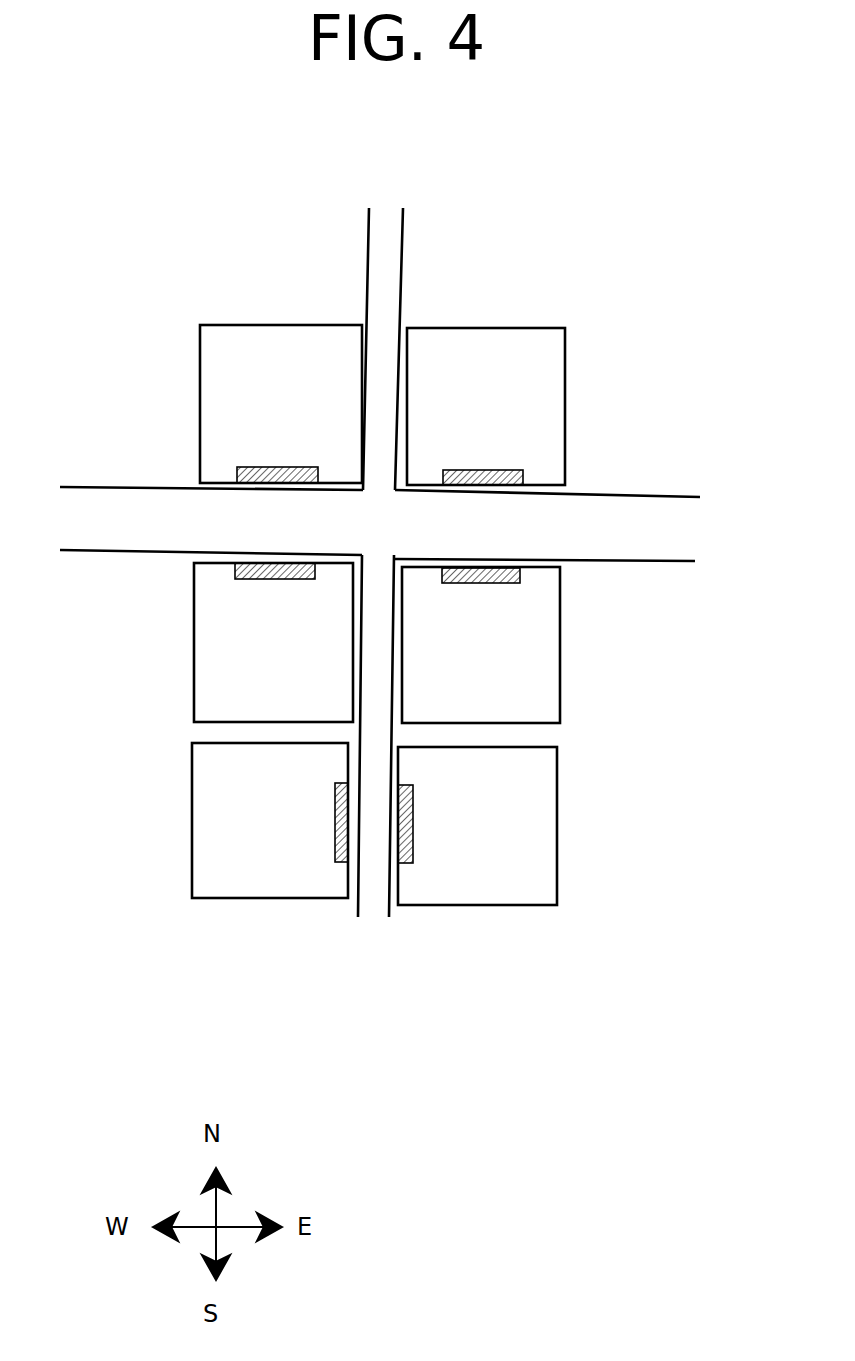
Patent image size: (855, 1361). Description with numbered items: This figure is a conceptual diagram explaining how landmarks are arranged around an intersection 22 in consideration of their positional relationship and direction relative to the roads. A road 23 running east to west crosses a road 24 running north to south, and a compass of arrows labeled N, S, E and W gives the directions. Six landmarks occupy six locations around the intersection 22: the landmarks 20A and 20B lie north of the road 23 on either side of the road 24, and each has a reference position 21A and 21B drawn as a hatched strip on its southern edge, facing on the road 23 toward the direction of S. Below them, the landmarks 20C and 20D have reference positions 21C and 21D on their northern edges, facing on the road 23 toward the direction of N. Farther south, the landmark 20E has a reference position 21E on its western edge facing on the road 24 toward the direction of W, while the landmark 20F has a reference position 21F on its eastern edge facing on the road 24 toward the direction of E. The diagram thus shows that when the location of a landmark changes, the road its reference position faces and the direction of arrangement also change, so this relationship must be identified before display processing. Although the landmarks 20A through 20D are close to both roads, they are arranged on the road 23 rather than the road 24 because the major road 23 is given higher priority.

The landmark 20A is at (197, 387).
The landmark 20B is at (567, 390).
The landmark 20C is at (560, 683).
The landmark 20D is at (190, 673).
The landmark 20E is at (557, 875).
The landmark 20F is at (190, 868).
The reference position 21A is at (288, 465).
The reference position 21B is at (485, 470).
The reference position 21C is at (492, 585).
The reference position 21D is at (265, 583).
The reference position 21E is at (415, 830).
The reference position 21F is at (328, 827).
The intersection 22 is at (603, 292).
The road 23 is at (680, 550).
The road 24 is at (383, 252).